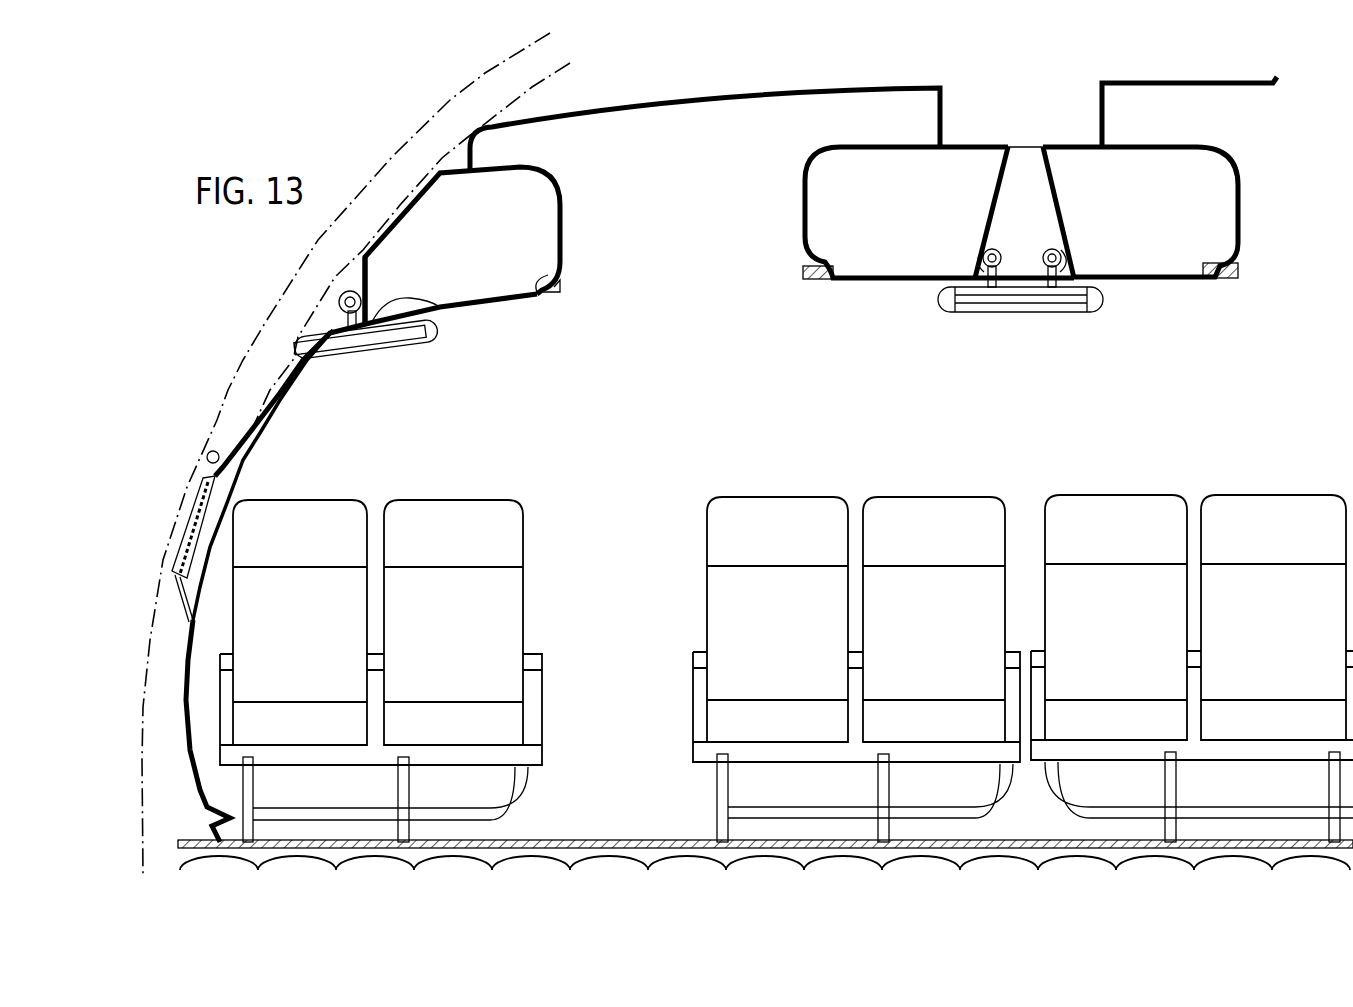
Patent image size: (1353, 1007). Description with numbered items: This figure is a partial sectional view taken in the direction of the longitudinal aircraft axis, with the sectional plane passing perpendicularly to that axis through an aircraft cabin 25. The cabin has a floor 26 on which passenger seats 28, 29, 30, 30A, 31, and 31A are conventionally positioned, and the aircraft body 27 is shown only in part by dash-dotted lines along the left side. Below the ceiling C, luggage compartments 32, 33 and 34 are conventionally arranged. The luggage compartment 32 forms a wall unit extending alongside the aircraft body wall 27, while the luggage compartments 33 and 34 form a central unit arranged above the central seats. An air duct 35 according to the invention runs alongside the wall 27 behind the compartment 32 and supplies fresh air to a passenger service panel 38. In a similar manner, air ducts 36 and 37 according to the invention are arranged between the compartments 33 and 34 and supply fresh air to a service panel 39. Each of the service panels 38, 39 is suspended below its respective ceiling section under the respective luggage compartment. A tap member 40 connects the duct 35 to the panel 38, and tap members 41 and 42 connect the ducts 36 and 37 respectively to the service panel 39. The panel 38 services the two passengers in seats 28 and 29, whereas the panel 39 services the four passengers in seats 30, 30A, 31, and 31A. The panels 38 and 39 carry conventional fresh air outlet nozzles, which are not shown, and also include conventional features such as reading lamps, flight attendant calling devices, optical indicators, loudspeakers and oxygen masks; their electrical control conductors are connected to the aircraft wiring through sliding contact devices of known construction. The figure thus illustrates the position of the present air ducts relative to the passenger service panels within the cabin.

The aircraft cabin 25 is at (662, 418).
The floor 26 is at (625, 838).
The aircraft body 27 is at (393, 157).
The seat 28 is at (325, 501).
The seat 29 is at (473, 503).
The seat 30 is at (796, 506).
The seat 30A is at (935, 506).
The seat 31 is at (1104, 506).
The seat 31A is at (1273, 508).
The luggage compartment 32 is at (562, 215).
The luggage compartment 33 is at (800, 202).
The luggage compartment 34 is at (1240, 204).
The air duct 35 is at (369, 278).
The air duct 36 is at (975, 246).
The air duct 37 is at (1057, 243).
The passenger service panel 38 is at (368, 352).
The service panel 39 is at (1037, 313).
The tap member 40 is at (440, 311).
The tap member 41 is at (990, 226).
The tap member 42 is at (1060, 230).
The ceiling C is at (867, 86).